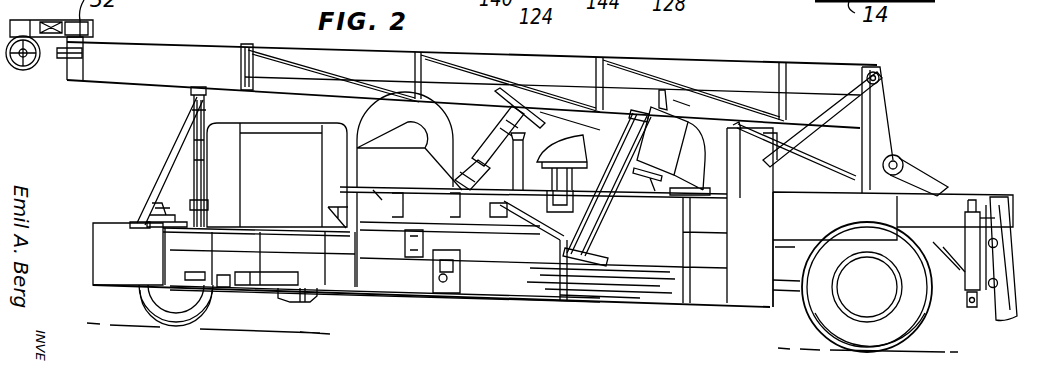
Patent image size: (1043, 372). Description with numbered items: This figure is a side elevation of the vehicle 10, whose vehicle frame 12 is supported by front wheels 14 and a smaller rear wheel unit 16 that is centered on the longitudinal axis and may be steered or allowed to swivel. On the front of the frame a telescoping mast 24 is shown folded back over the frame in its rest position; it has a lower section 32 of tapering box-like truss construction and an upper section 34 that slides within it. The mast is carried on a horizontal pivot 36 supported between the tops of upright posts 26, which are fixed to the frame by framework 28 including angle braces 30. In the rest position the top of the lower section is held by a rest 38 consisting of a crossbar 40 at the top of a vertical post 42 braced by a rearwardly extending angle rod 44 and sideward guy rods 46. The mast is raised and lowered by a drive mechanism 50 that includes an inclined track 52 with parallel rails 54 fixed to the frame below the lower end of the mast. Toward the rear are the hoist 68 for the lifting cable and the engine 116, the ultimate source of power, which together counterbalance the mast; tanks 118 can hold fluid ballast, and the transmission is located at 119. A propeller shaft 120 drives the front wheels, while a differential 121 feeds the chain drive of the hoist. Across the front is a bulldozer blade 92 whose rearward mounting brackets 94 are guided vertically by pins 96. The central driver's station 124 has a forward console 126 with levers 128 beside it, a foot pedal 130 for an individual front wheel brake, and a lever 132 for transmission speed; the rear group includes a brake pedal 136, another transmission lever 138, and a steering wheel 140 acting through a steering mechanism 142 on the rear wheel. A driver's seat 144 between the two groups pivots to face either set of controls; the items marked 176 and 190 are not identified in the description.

The vehicle 10 is at (553, 303).
The vehicle frame 12 is at (610, 290).
The front wheels 14 is at (920, 318).
The rear wheel unit 16 is at (140, 297).
The mast 24 is at (547, 50).
The upright posts 26 is at (875, 102).
The framework 28 is at (857, 185).
The angle braces 30 is at (828, 112).
The lower section 32 is at (273, 45).
The upper section 34 is at (60, 62).
The horizontal pivot 36 is at (880, 78).
The rest 38 is at (192, 95).
The crossbar 40 is at (197, 78).
The vertical post 42 is at (193, 153).
The angle rod 44 is at (180, 142).
The guy rods 46 is at (205, 120).
The drive mechanism 50 is at (913, 165).
The inclined track 52 is at (805, 158).
The rails 54 is at (867, 157).
The hoist 68 is at (383, 110).
The bulldozer blade 92 is at (1010, 200).
The mounting brackets 94 is at (995, 197).
The pins 96 is at (997, 283).
The engine 116 is at (257, 177).
The tanks 118 is at (110, 233).
The transmission 119 is at (383, 183).
The propeller shaft 120 is at (787, 283).
The differential 121 is at (313, 296).
The driver's station 124 is at (555, 123).
The console 126 is at (673, 100).
The levers 128 is at (673, 142).
The foot pedal 130 is at (645, 183).
The lever 132 is at (597, 147).
The brake pedal 136 is at (452, 150).
The transmission speed control lever 138 is at (489, 148).
The steering wheel 140 is at (520, 92).
The steering mechanism 142 is at (457, 275).
The driver's seat 144 is at (549, 172).
The mounting bracket 176 is at (155, 228).
The mounting pad 190 is at (152, 205).